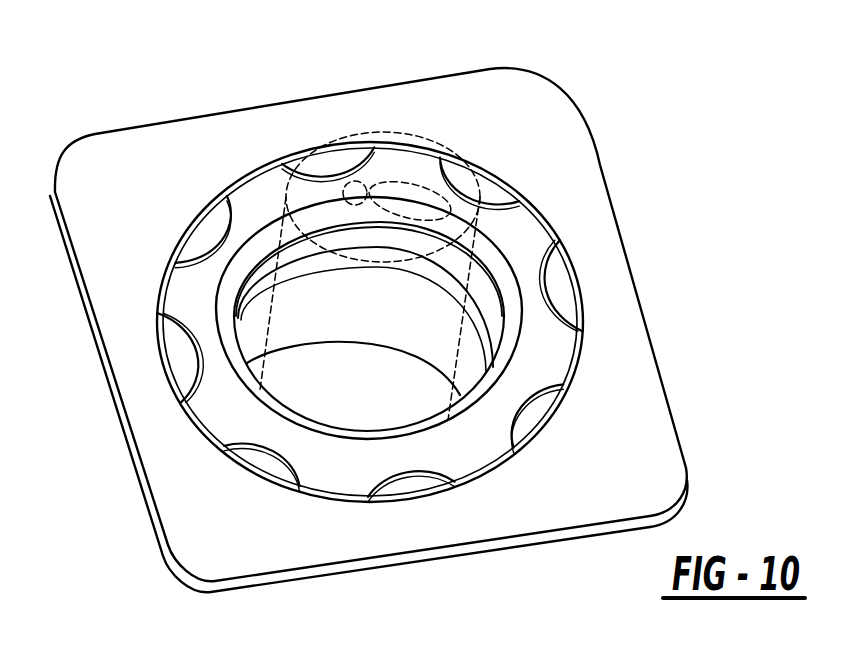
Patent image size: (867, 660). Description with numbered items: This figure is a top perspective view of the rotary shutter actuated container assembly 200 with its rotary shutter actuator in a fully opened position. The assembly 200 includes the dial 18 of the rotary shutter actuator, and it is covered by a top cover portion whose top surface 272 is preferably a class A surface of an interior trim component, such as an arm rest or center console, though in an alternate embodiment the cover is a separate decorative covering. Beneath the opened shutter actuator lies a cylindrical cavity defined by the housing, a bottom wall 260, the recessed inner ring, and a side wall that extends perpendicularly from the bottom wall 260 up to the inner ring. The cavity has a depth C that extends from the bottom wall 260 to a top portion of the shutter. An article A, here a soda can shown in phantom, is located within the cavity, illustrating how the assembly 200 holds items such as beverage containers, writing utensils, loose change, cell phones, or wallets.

The rotary shutter actuated container assembly 200 is at (695, 97).
The top surface 272 is at (500, 107).
The dial 18 is at (540, 227).
The bottom wall 260 is at (453, 403).
The article A is at (399, 132).
The depth C is at (362, 413).